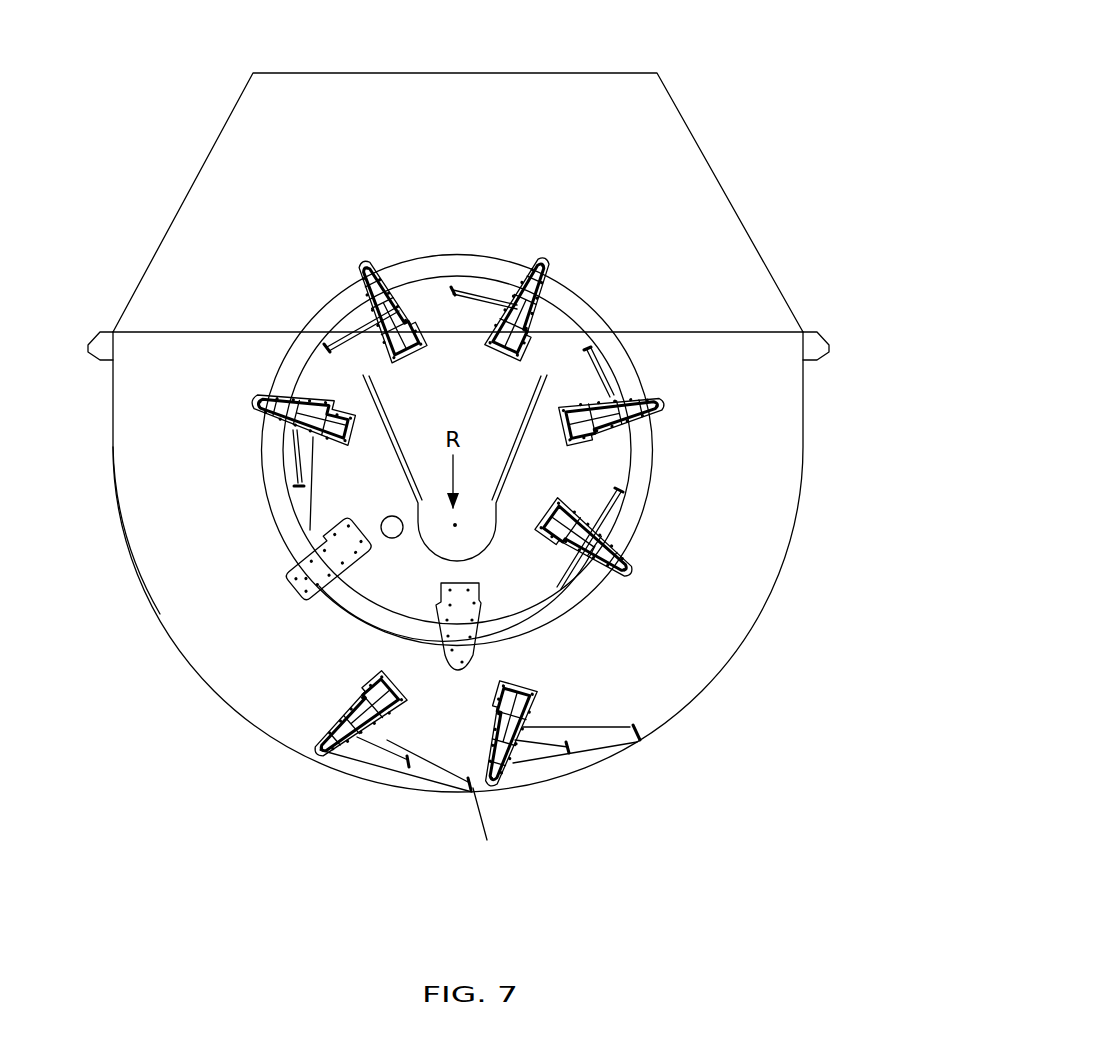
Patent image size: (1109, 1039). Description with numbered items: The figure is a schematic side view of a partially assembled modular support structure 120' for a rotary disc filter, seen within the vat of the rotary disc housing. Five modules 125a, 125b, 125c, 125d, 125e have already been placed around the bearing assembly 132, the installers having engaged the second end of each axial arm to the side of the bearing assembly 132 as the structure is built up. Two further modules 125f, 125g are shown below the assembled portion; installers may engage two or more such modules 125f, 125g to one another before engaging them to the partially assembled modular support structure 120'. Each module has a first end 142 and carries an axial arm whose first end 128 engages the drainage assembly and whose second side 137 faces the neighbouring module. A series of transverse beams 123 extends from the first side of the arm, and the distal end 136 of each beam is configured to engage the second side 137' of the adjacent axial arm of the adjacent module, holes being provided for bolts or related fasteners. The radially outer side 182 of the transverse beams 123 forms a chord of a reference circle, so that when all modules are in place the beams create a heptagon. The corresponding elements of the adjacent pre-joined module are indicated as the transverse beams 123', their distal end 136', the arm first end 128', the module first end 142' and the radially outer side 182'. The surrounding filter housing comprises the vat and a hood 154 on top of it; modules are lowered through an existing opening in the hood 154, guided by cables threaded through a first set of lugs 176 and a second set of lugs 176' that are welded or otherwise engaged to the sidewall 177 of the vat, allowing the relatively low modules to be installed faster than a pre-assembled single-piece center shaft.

The hood 154 is at (690, 190).
The lugs 176 is at (66, 301).
The second set of lugs 176' is at (867, 310).
The sidewall of the vat 177 is at (160, 614).
The partially assembled modular support structure 120' is at (295, 197).
The module 125a is at (251, 505).
The module 125b is at (297, 313).
The module 125c is at (460, 243).
The module 125d is at (630, 310).
The module 125e is at (656, 512).
The module 125f is at (619, 707).
The module 125g is at (372, 800).
The bearing assembly 132 is at (575, 303).
The transverse beams 123 is at (458, 514).
The link rod 123' is at (590, 709).
The first end of the axial arm 128 is at (384, 626).
The tab plate 128' is at (568, 653).
The distal end of the transverse beam 136 is at (411, 807).
The link 136' is at (624, 744).
The second side of the axial arm 137 is at (296, 695).
The second side of the adjacent axial arm 137' is at (446, 692).
The first end of the module 142 is at (235, 793).
The direction arrow 142' is at (541, 842).
The radially outer side of the transverse beams 182 is at (335, 795).
The rod 182' is at (615, 803).